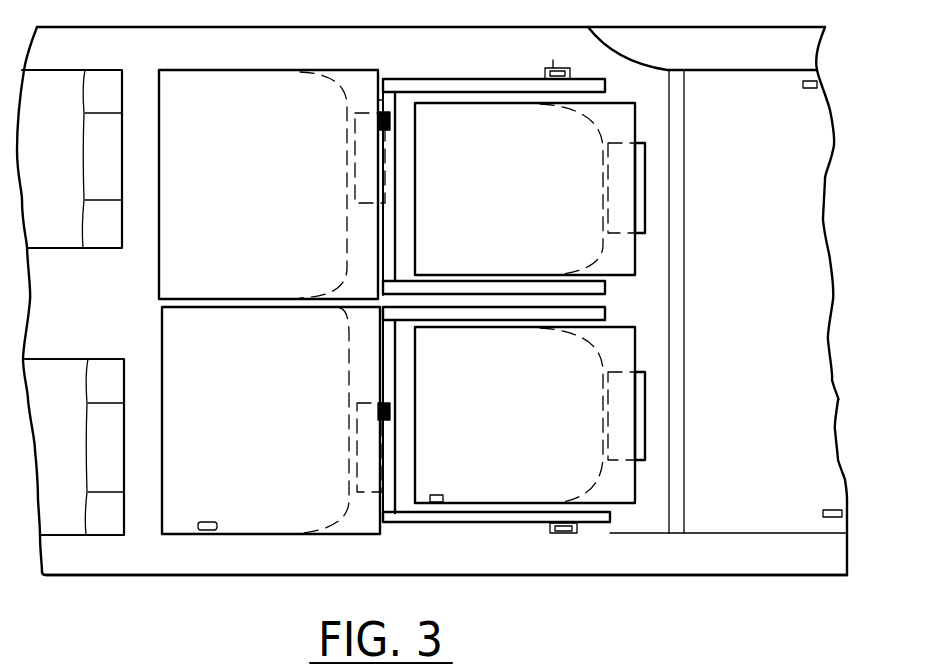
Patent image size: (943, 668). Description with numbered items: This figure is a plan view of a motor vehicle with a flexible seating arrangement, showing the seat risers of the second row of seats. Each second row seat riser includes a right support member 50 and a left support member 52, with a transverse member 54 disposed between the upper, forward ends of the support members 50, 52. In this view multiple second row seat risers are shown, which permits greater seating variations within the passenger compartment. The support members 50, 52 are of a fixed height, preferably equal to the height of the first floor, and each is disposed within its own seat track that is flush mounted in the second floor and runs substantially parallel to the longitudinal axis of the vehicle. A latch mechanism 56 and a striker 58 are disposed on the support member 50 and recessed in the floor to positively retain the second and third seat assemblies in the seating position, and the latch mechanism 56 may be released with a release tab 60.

The right support member 50 is at (607, 311).
The left support member 52 is at (600, 572).
The transverse member 54 is at (392, 352).
The latch mechanism 56 is at (578, 527).
The striker 58 is at (432, 503).
The release tab 60 is at (557, 533).